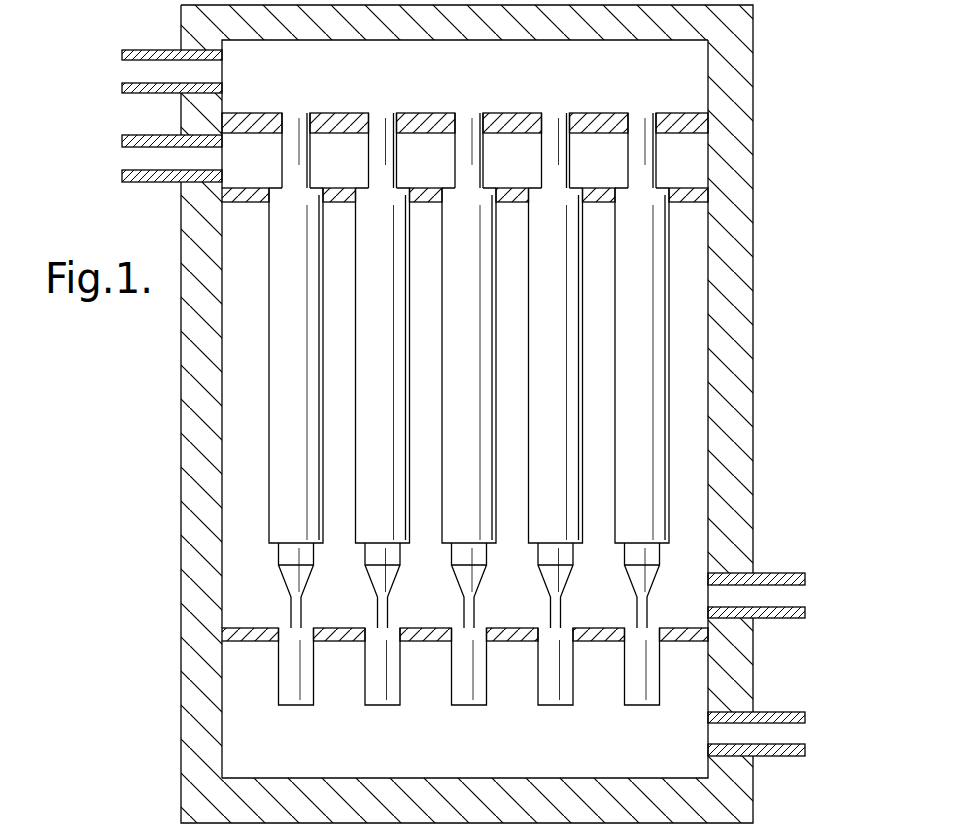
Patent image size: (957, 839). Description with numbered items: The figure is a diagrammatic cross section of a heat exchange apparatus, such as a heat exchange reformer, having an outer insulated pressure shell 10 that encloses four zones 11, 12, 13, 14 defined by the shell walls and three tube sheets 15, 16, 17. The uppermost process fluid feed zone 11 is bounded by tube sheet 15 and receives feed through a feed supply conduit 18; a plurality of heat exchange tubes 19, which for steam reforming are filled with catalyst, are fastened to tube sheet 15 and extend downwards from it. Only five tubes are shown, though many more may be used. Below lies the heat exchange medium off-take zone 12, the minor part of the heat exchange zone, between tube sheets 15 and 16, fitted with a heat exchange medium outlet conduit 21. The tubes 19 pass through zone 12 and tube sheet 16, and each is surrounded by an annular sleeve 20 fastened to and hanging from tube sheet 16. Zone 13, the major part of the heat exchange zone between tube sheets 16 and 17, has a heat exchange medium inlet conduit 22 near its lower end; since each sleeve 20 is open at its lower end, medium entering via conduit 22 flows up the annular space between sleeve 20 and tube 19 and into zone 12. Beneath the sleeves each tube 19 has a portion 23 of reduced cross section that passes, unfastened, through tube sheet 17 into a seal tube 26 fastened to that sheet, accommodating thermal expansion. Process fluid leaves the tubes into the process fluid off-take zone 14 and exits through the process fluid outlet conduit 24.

The outer insulated pressure shell 10 is at (753, 397).
The process fluid feed zone 11 is at (685, 87).
The heat exchange medium off-take zone 12 is at (685, 167).
The heat exchange zone (first, major part) 13 is at (685, 498).
The process fluid off-take zone 14 is at (247, 727).
The tube sheet 15 is at (410, 112).
The tube sheet 16 is at (242, 187).
The tube sheet 17 is at (690, 627).
The feed supply conduit 18 is at (158, 50).
The heat exchange tubes 19 is at (298, 140).
The annular sleeve 20 is at (287, 340).
The heat exchange medium outlet conduit 21 is at (152, 183).
The heat exchange medium inlet conduit 22 is at (777, 573).
The portion of reduced cross section 23 is at (290, 618).
The process fluid outlet conduit 24 is at (777, 757).
The seal tube 26 is at (300, 688).